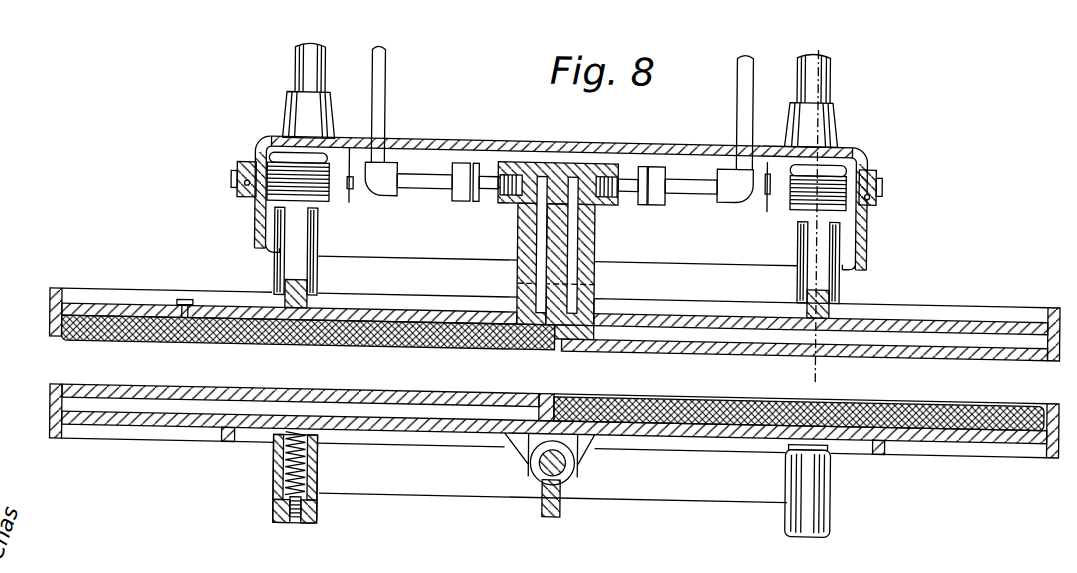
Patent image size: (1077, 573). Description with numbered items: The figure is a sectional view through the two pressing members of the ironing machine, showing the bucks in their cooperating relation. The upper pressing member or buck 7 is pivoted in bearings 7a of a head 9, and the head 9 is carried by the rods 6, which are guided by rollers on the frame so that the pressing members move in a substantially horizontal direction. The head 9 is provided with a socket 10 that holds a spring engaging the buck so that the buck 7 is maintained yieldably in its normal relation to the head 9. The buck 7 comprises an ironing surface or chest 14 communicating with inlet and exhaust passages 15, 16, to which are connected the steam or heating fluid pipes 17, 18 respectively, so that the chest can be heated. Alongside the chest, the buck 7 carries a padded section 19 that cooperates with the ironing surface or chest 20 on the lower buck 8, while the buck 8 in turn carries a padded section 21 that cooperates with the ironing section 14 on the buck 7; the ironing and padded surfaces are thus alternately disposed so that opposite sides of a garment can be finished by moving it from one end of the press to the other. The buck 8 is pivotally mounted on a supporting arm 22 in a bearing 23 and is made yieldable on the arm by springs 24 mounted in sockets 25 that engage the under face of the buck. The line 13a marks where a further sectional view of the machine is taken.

The rods 6 is at (318, 82).
The pressing member or buck 7 is at (554, 308).
The bearings 7a is at (332, 188).
The buck 8 is at (554, 446).
The head 9 is at (486, 139).
The socket 10 is at (316, 252).
The section line 13a— 13a is at (822, 206).
The ironing surface or chest 14 is at (898, 347).
The inlet passage 15 is at (571, 240).
The exhaust passage 16 is at (540, 222).
The steam or heating fluid pipe 17 is at (734, 91).
The steam or heating fluid pipe 18 is at (376, 87).
The padded section 19 is at (408, 350).
The ironing surface or chest 20 is at (216, 400).
The padded section 21 is at (966, 394).
The supporting arm 22 is at (545, 513).
The bearing 23 is at (579, 477).
The springs 24 is at (315, 477).
The sockets 25 is at (275, 479).